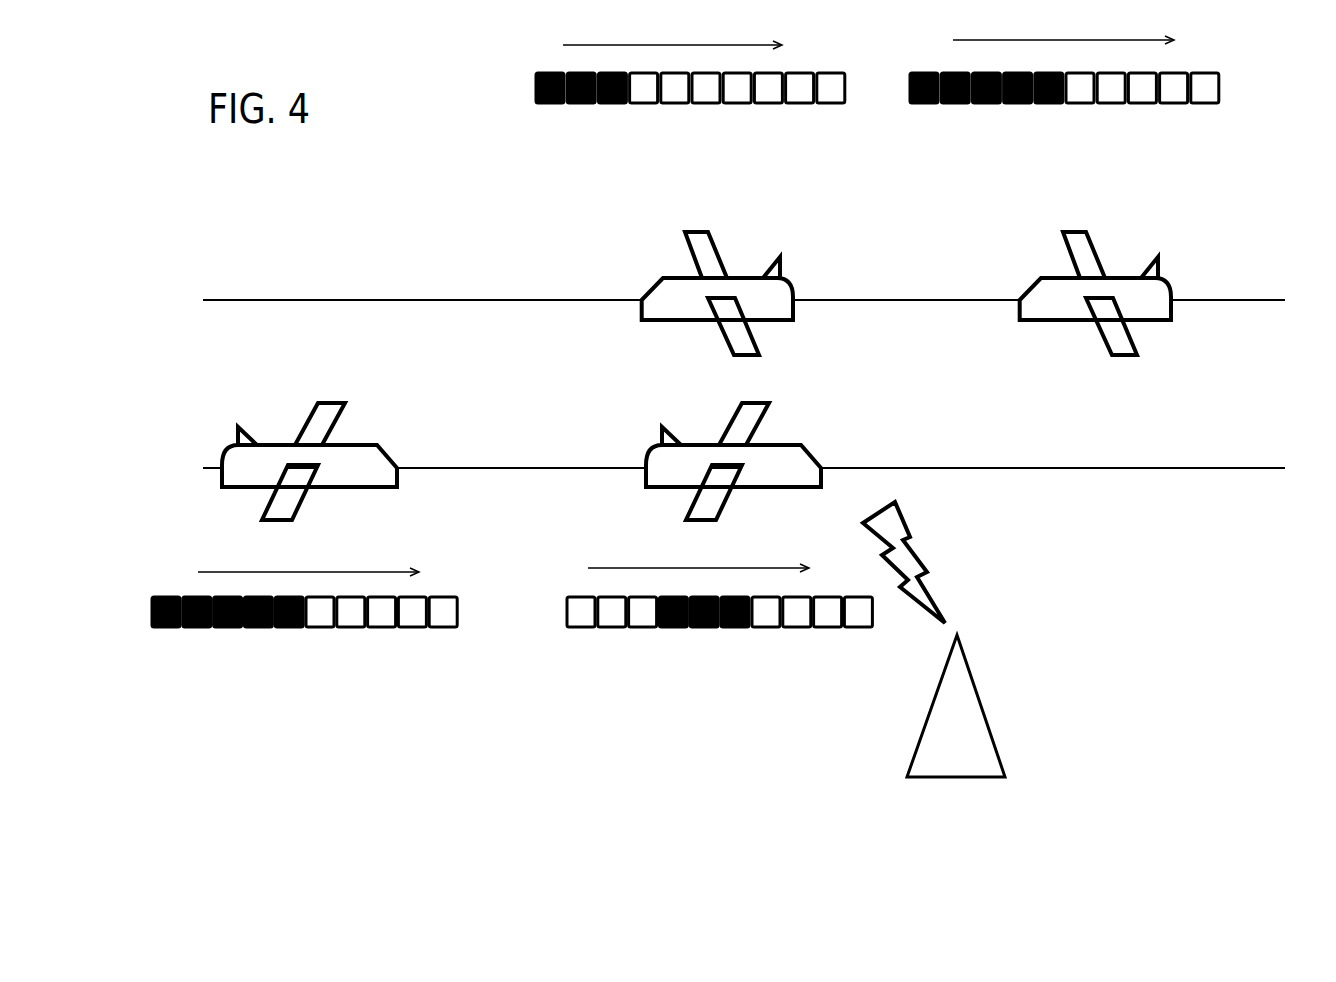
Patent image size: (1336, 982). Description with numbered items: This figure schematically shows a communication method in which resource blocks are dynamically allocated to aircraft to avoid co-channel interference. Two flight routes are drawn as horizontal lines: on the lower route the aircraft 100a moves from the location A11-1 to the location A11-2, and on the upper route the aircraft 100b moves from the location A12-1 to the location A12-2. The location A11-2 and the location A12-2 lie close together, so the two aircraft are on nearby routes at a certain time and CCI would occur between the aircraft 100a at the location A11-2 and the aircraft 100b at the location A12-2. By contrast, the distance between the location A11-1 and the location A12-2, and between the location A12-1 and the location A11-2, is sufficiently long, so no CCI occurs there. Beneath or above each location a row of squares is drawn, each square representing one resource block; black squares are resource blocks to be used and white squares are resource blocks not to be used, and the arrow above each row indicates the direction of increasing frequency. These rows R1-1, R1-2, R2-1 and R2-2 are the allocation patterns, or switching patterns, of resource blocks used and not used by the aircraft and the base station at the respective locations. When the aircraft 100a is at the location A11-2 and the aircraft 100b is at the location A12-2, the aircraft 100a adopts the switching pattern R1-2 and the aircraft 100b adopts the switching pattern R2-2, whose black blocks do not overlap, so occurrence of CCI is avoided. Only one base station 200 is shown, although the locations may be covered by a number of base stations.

The aircraft 100a is at (514, 438).
The aircraft 100b is at (898, 272).
The location A11-1 is at (309, 463).
The location A11-2 is at (733, 463).
The location A12-1 is at (1095, 293).
The location A12-2 is at (717, 295).
The allocation pattern R1-1 is at (178, 643).
The allocation pattern R1-2 is at (608, 643).
The allocation pattern R2-1 is at (932, 112).
The allocation pattern R2-2 is at (558, 112).
The base station 200 is at (990, 760).